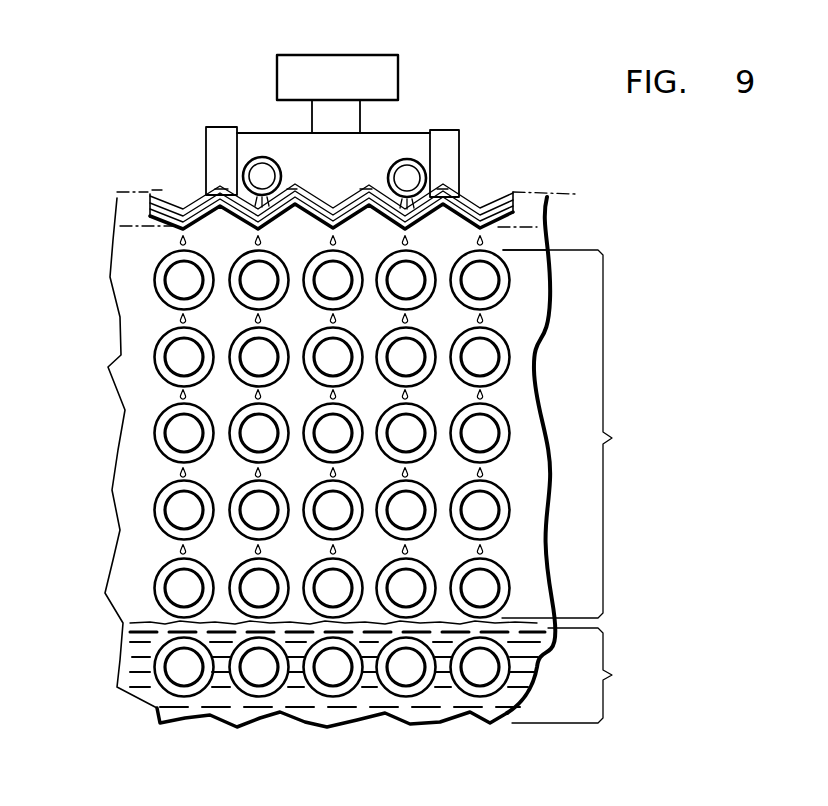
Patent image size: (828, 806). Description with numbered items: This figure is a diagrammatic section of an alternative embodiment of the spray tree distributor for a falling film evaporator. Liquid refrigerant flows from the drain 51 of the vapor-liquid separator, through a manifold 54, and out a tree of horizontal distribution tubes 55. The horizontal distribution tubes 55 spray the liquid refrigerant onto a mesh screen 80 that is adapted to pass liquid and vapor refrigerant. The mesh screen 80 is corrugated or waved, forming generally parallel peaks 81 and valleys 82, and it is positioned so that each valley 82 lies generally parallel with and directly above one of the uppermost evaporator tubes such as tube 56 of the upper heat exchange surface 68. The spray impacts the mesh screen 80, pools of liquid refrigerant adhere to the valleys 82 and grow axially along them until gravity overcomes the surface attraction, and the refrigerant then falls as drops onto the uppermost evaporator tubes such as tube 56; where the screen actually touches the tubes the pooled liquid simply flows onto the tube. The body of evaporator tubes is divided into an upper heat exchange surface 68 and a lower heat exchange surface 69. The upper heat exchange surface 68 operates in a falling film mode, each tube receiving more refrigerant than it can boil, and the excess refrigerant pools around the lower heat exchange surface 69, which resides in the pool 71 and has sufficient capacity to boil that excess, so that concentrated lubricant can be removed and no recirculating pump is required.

The drain 51 is at (353, 60).
The manifold 54 is at (270, 140).
The horizontal distribution tubes 55 is at (255, 158).
The evaporator tube 56 is at (228, 307).
The upper heat exchange surface 68 is at (580, 434).
The lower heat exchange surface 69 is at (585, 675).
The pool 71 is at (157, 708).
The mesh screen 80 is at (362, 206).
The peaks 81 is at (215, 186).
The valleys 82 is at (181, 230).